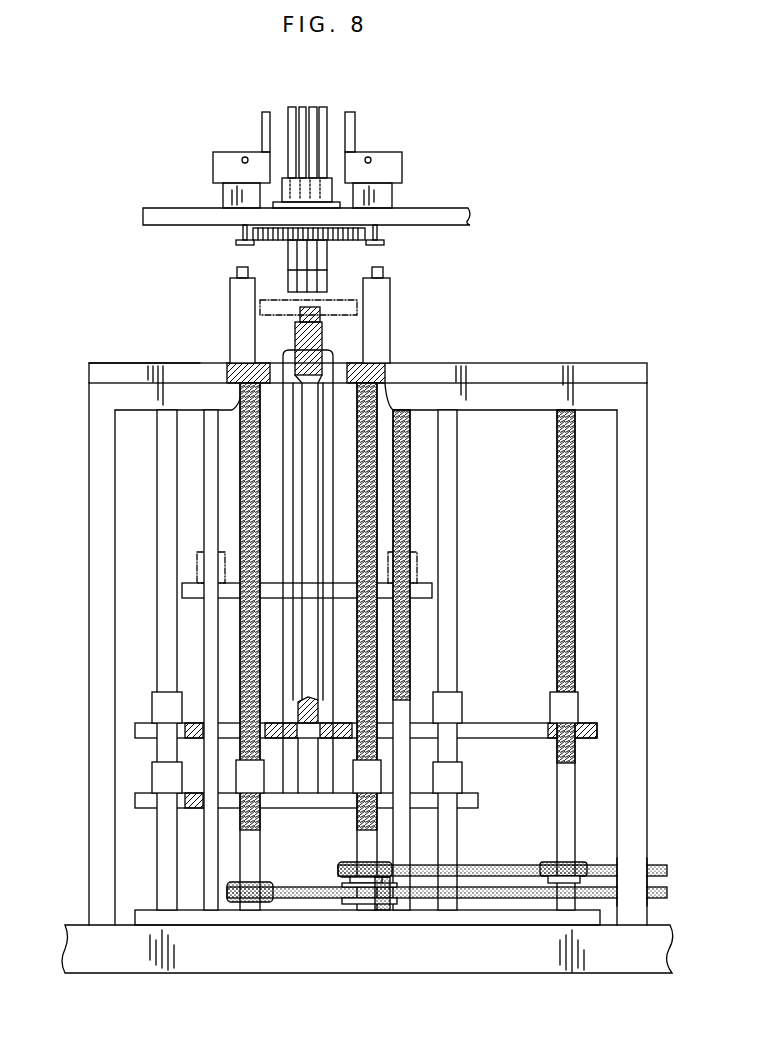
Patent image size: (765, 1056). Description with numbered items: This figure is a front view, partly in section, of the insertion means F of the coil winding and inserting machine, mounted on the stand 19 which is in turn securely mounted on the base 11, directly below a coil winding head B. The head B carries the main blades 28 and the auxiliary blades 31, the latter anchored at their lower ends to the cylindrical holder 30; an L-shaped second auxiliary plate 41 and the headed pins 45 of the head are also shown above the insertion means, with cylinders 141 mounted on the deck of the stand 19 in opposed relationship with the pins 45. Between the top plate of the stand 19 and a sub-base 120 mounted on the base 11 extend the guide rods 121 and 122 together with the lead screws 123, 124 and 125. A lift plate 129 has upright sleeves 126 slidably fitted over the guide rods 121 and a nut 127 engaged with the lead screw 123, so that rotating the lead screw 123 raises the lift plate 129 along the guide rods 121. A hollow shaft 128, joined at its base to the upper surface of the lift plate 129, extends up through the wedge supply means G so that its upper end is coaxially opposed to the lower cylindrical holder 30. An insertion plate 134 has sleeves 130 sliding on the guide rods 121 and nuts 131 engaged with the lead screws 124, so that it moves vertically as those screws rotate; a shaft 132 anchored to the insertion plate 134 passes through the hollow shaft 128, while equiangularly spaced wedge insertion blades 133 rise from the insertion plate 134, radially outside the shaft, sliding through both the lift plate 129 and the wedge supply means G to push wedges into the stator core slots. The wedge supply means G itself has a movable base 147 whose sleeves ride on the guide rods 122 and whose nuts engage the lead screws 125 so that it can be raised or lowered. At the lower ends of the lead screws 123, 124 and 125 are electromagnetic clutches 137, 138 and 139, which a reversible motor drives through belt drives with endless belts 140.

The base 11 is at (123, 965).
The stand 19 is at (100, 362).
The main blades 28 is at (301, 107).
The cylindrical holder 30 is at (297, 278).
The auxiliary blades 31 is at (288, 257).
The second auxiliary plate 41 is at (355, 126).
The pins 45 is at (243, 232).
The coil winding head B is at (452, 208).
The insertion means F is at (541, 363).
The wedge supply means G is at (333, 300).
The sub-base 120 is at (505, 915).
The guide rods 121 is at (157, 487).
The guide rods 122 is at (203, 430).
The lead screw 123 is at (557, 507).
The lead screws 124 is at (235, 369).
The lead screws 125 is at (405, 633).
The sleeves 126 is at (160, 705).
The nut 127 is at (552, 707).
The hollow shaft 128 is at (322, 318).
The lift plate 129 is at (511, 736).
The sleeves 130 is at (160, 777).
The nuts 131 is at (262, 772).
The shaft 132 is at (311, 340).
The wedge insertion blades 133 is at (333, 783).
The insertion plate 134 is at (478, 801).
The electromagnetic clutch 137 is at (550, 862).
The electromagnetic clutch 138 is at (338, 866).
The electromagnetic clutch 139 is at (385, 910).
The endless belts 140 is at (464, 887).
The cylinders 141 is at (230, 288).
The movable base 147 is at (432, 590).